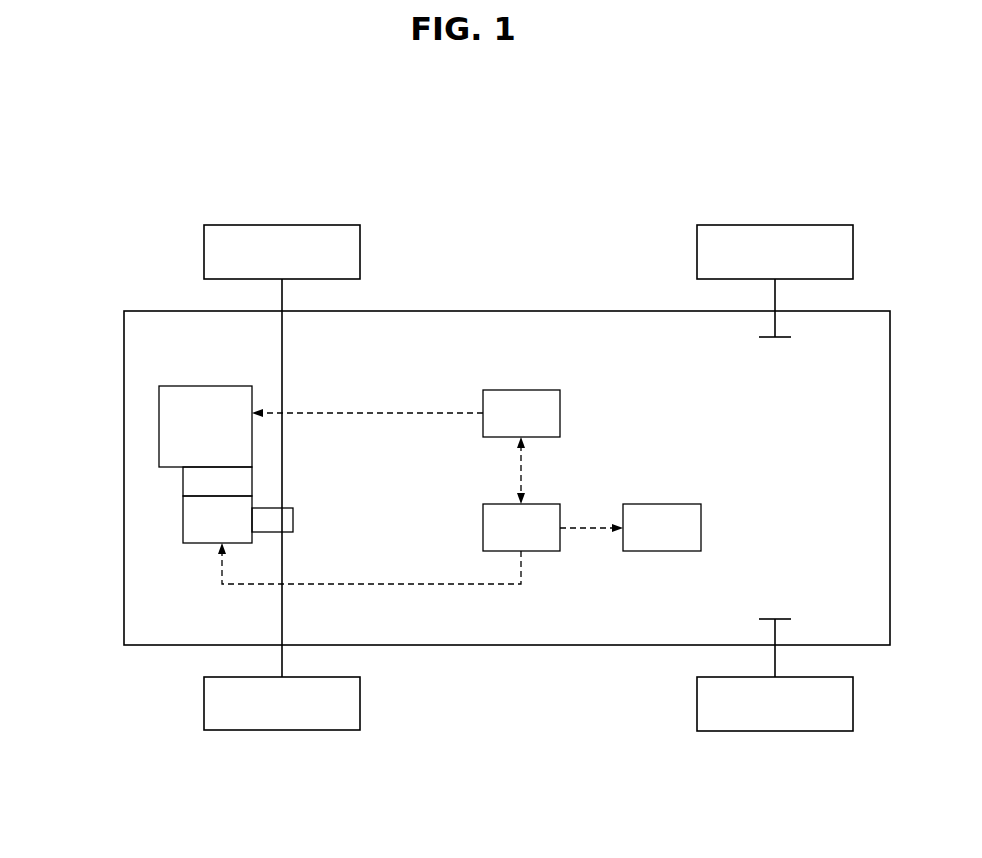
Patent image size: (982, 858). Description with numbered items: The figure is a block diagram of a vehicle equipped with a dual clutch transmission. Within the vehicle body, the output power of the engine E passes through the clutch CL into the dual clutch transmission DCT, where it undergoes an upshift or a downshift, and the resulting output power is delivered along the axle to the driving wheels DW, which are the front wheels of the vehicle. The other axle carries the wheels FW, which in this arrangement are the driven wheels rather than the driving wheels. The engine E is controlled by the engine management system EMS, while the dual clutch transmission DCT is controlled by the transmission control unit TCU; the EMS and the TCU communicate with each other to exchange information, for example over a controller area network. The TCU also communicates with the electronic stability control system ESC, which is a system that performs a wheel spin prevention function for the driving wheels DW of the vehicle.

The driving wheels DW is at (303, 224).
The front wheel (non-driving wheel) FW is at (796, 224).
The engine E is at (175, 427).
The clutch CL is at (192, 480).
The dual clutch transmission DCT is at (190, 524).
The engine management system EMS is at (522, 396).
The transmission control unit TCU is at (543, 544).
The electronic stability control system ESC is at (659, 544).